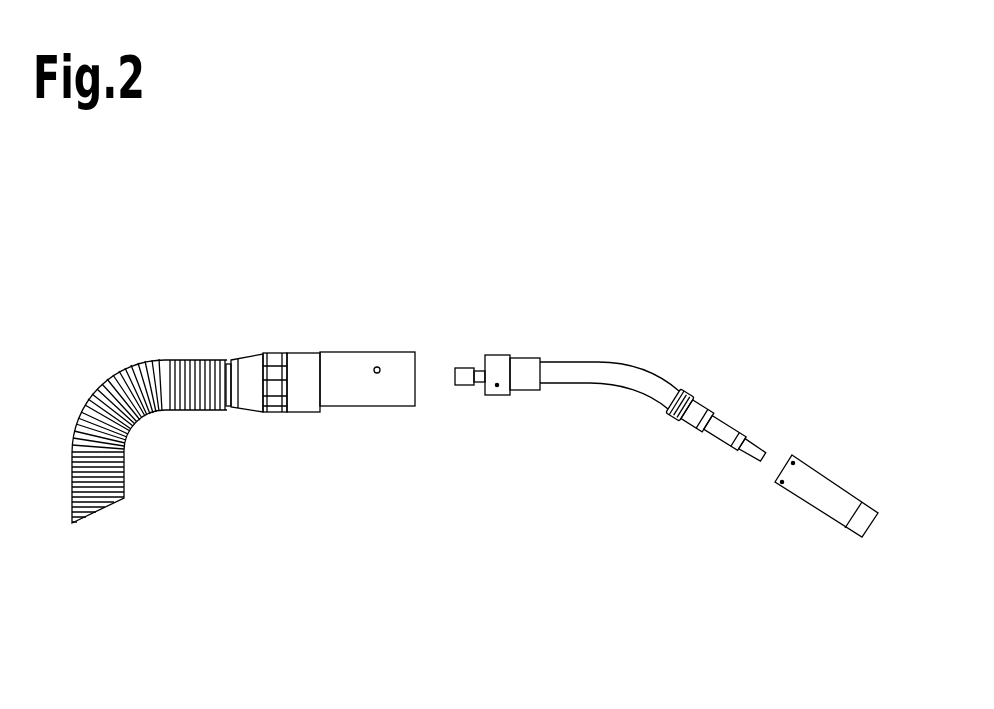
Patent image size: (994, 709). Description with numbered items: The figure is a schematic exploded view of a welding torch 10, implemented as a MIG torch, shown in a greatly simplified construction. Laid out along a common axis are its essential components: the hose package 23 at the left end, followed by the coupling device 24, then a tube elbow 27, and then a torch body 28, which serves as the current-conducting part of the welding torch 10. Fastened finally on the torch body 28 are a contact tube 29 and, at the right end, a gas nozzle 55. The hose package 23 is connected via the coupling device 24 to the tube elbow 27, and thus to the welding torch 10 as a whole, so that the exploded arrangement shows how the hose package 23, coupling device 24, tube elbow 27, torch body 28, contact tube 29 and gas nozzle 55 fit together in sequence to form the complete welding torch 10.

The welding torch 10 is at (698, 278).
The hose package 23 is at (275, 303).
The coupling device 24 is at (468, 423).
The tube elbow 27 is at (588, 372).
The torch body 28 is at (730, 380).
The contact tube 29 is at (745, 450).
The gas nozzle 55 is at (815, 492).